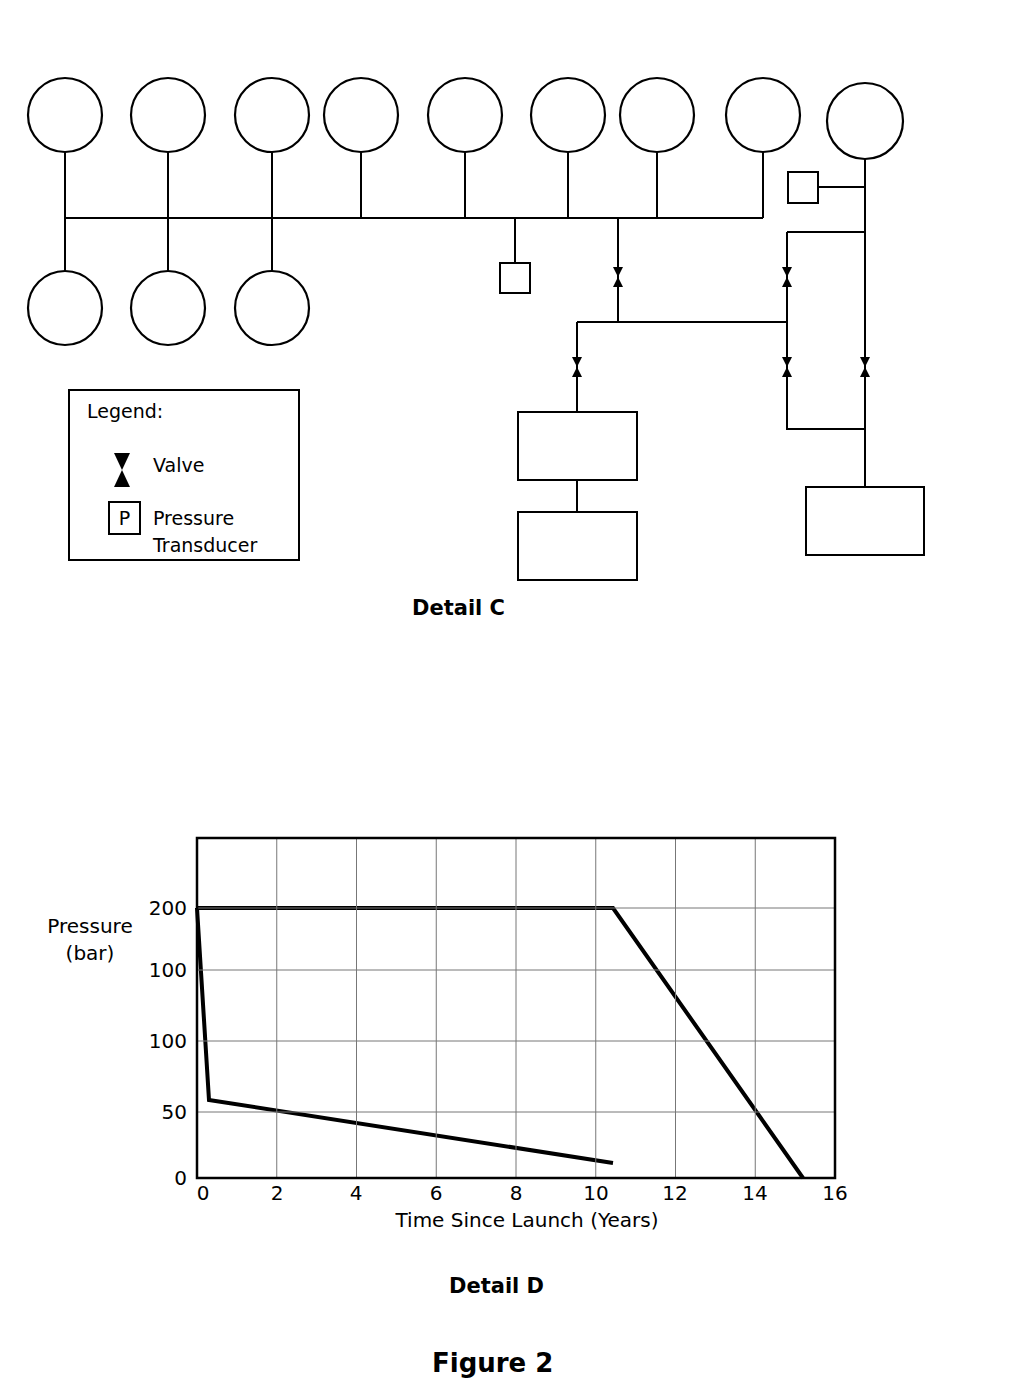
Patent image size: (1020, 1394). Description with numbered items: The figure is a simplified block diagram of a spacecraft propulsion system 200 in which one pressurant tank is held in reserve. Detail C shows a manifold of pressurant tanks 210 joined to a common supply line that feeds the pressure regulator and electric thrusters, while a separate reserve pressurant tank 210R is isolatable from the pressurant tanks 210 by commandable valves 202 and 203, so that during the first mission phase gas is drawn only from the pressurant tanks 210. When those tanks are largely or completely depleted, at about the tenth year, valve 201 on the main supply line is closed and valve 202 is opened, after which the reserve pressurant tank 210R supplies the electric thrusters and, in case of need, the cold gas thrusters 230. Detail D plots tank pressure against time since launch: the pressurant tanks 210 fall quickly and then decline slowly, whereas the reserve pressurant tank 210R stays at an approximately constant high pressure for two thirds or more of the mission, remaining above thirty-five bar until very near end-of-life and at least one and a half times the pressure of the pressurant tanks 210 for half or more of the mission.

The propulsion system 200 is at (177, 34).
The pressurant tanks 210 is at (303, 1102).
The reserve pressurant tank 210R is at (637, 935).
The valve 201 is at (626, 278).
The valve 202 is at (780, 282).
The valve 203 is at (778, 372).
The cold gas thrusters 230 is at (806, 521).